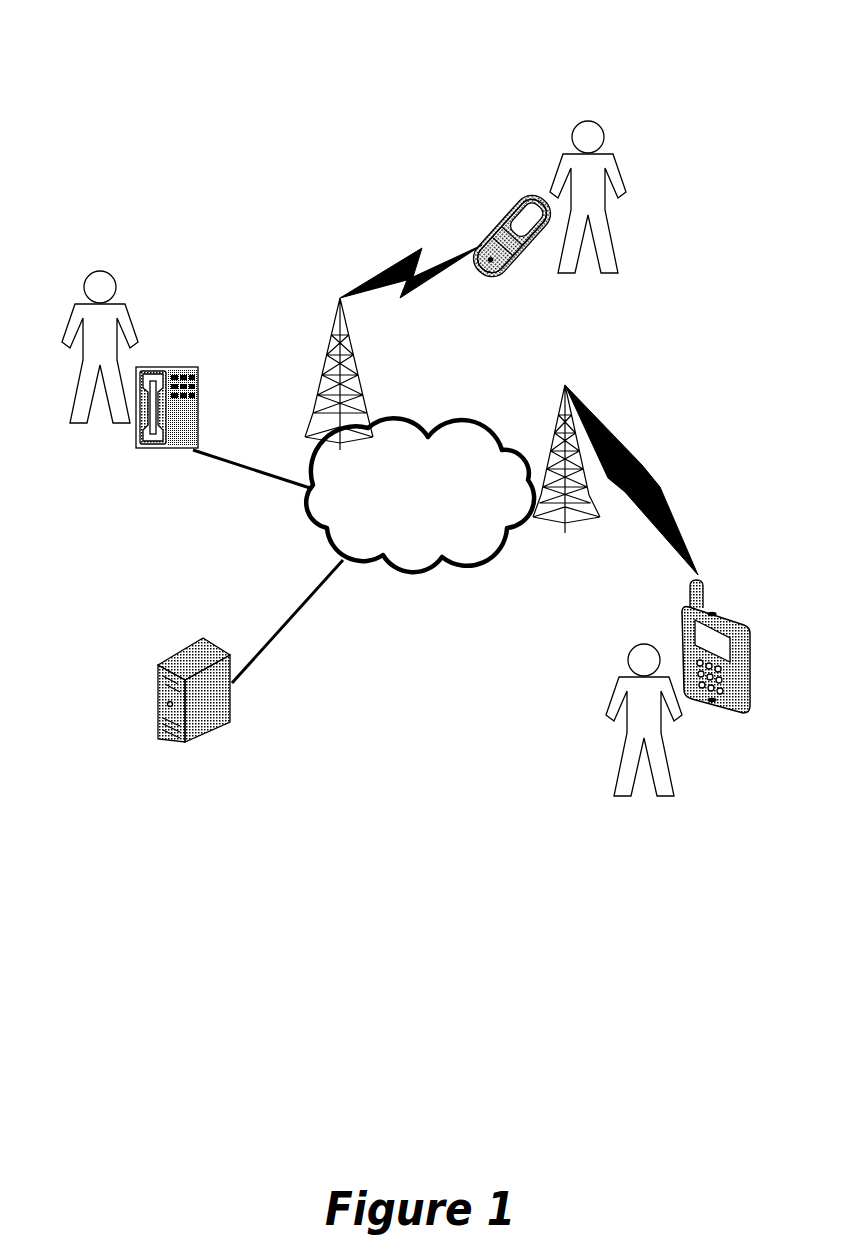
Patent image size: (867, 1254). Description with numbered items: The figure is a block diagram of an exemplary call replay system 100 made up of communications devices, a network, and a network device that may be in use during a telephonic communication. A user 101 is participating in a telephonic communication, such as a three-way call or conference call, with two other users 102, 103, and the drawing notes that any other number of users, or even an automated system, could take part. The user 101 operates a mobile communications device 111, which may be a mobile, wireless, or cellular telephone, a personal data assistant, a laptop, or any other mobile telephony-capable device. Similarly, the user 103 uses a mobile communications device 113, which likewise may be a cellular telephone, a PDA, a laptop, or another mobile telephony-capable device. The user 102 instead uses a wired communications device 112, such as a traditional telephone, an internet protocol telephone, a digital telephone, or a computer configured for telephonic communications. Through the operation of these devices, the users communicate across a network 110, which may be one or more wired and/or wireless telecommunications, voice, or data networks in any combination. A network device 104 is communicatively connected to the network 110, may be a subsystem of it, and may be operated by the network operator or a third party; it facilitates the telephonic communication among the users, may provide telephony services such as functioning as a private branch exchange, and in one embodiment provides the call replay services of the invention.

The system 100 is at (740, 101).
The user 101 is at (644, 736).
The user 102 is at (100, 361).
The user 103 is at (588, 212).
The network device 104 is at (194, 707).
The network 110 is at (420, 495).
The mobile communications device 111 is at (716, 666).
The wired communications device 112 is at (167, 424).
The mobile communications device 113 is at (512, 245).